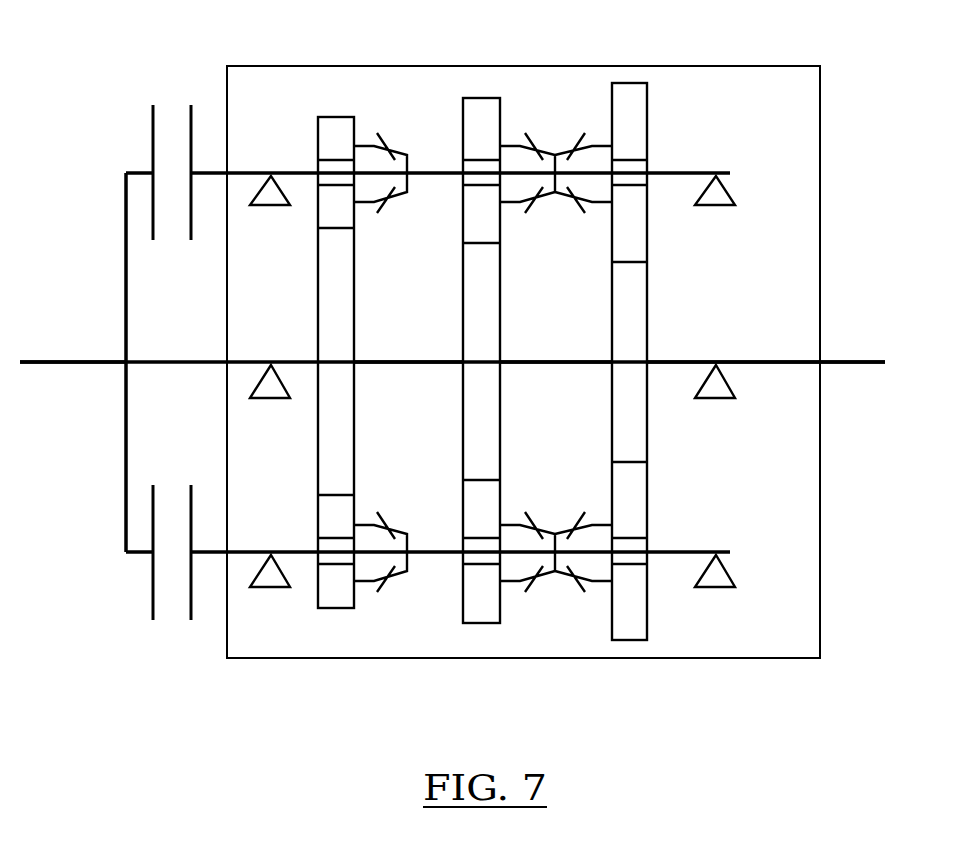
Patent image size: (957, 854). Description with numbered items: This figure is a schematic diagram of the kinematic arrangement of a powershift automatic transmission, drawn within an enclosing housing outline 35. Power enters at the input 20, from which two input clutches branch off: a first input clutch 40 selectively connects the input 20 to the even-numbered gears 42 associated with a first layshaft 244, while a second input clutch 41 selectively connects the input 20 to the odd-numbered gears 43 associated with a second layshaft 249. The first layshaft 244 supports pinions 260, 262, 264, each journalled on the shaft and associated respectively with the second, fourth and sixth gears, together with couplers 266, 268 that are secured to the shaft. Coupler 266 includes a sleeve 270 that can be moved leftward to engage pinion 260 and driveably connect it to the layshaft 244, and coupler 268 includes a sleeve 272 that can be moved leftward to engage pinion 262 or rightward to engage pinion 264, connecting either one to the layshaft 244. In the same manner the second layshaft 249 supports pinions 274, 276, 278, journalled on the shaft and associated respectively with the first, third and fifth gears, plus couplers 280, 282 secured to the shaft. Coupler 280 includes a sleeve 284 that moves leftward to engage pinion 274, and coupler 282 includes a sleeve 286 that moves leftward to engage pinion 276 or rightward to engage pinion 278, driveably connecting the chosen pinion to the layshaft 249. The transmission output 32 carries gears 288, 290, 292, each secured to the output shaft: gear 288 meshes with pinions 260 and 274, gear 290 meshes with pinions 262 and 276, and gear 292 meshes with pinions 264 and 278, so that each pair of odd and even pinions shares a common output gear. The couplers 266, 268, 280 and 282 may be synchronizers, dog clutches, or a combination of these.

The input 20 is at (97, 362).
The transmission output 32 is at (863, 360).
The transmission housing 35 is at (512, 66).
The first input clutch 40 is at (153, 580).
The second input clutch 41 is at (153, 147).
The even-numbered gears 42 is at (369, 623).
The odd-numbered gears 43 is at (383, 100).
The first layshaft 244 is at (213, 555).
The second layshaft 249 is at (213, 173).
The pinion 260 is at (317, 522).
The pinion 262 is at (463, 526).
The pinion 264 is at (648, 503).
The coupler 266 is at (413, 565).
The coupler 268 is at (557, 558).
The sleeve 270 is at (408, 530).
The sleeve 272 is at (545, 520).
The pinion 274 is at (333, 115).
The pinion 276 is at (483, 98).
The pinion 278 is at (629, 83).
The coupler 280 is at (413, 157).
The coupler 282 is at (562, 177).
The sleeve 284 is at (397, 203).
The sleeve 286 is at (540, 140).
The gear 288 is at (353, 408).
The gear 290 is at (500, 407).
The gear 292 is at (647, 413).